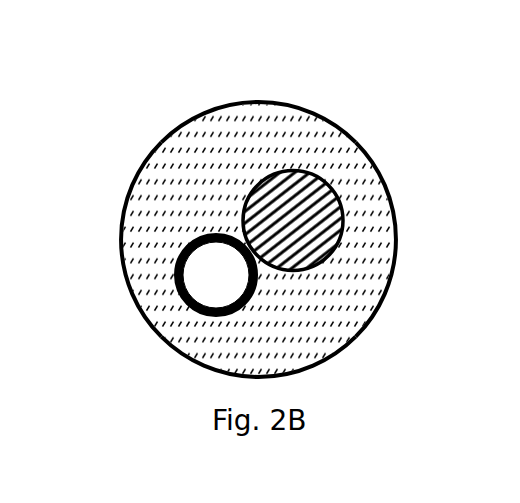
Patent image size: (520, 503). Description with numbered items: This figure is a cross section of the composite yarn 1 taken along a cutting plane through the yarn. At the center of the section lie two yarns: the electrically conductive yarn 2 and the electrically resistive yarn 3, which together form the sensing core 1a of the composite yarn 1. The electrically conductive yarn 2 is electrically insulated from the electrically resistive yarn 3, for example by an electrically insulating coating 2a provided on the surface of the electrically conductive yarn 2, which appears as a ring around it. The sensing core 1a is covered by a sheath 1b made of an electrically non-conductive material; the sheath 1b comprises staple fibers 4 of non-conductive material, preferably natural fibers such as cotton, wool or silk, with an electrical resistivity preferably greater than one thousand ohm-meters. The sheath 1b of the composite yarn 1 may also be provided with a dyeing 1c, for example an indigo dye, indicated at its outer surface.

The composite yarn 1 is at (136, 83).
The sensing core 1a is at (293, 308).
The sheath 1b is at (286, 127).
The dyeing 1c is at (396, 248).
The electrically conductive yarn 2 is at (207, 283).
The electrically insulating coating 2a is at (175, 260).
The electrically resistive yarn 3 is at (326, 202).
The staple fibers 4 is at (160, 173).